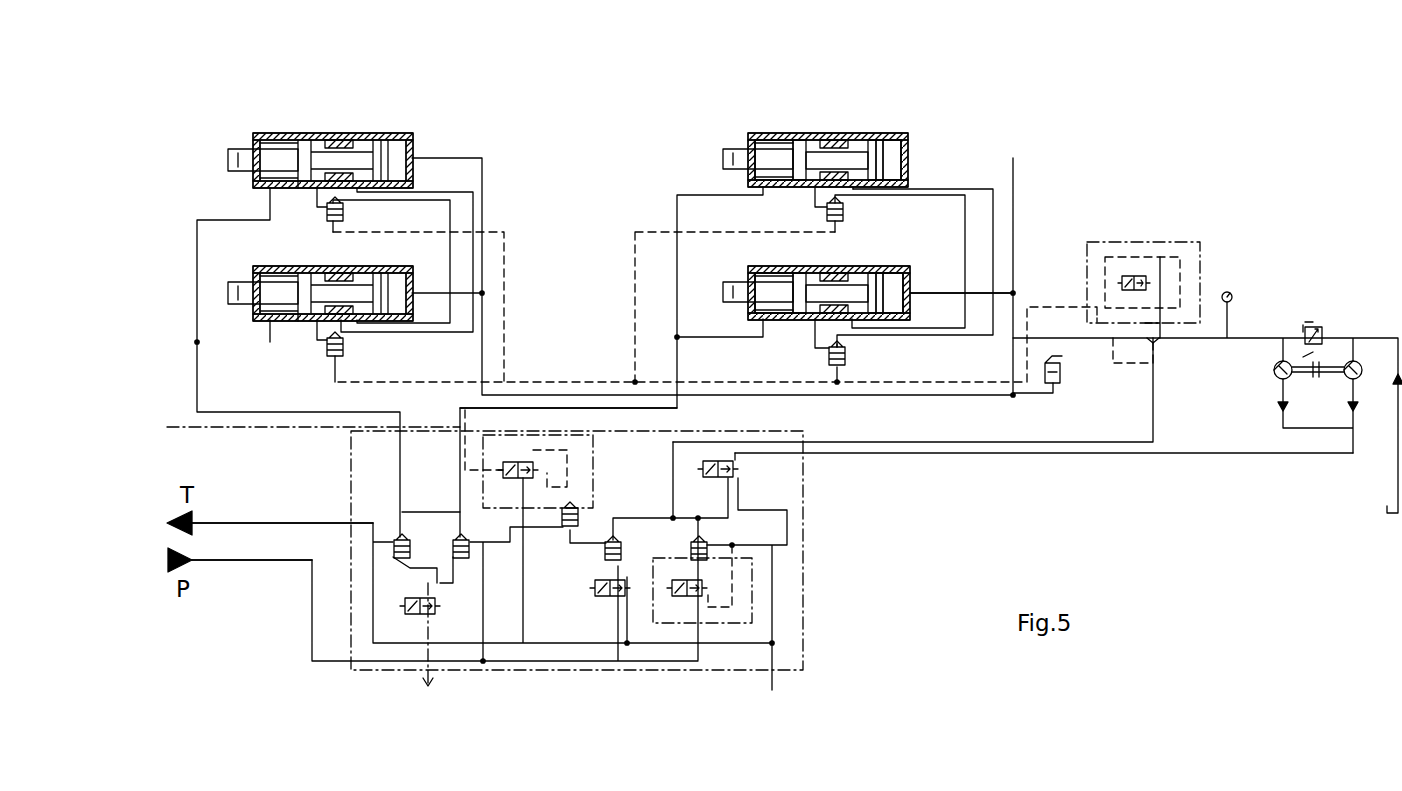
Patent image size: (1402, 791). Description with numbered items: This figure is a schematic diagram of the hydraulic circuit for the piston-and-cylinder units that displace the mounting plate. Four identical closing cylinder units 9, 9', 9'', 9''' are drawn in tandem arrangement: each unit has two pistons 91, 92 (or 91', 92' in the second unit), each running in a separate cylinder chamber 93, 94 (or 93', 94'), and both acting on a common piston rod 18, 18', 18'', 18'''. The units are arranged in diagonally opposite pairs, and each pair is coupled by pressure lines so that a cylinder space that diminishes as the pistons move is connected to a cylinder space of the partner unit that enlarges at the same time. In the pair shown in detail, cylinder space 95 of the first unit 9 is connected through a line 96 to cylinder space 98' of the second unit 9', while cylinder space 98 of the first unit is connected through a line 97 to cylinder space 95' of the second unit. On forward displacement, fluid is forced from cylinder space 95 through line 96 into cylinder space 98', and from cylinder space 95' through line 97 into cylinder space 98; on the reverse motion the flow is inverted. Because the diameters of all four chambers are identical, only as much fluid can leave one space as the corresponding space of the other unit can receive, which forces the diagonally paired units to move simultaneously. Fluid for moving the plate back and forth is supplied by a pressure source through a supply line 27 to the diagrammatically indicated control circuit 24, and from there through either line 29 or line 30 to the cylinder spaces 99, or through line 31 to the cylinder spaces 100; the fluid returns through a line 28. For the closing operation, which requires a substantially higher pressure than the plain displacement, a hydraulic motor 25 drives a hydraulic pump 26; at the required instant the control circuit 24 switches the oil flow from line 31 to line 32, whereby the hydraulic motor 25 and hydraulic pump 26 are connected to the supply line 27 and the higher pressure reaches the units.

The hydraulic piston-and-cylinder unit 9 is at (870, 137).
The second piston-and-cylinder unit 9' is at (900, 262).
The piston-and-cylinder unit 9'' is at (402, 160).
The piston-and-cylinder unit 9''' is at (398, 293).
The piston rod 18 is at (727, 156).
The piston rod 18' is at (739, 276).
The piston rod 18'' is at (235, 156).
The piston rod 18''' is at (246, 273).
The control circuit 24 is at (793, 572).
The hydraulic motor 25 is at (1358, 362).
The hydraulic pump 26 is at (1276, 364).
The supply line 27 is at (232, 562).
The return line 28 is at (275, 523).
The line 29 is at (270, 412).
The line 30 is at (620, 409).
The line 31 is at (950, 443).
The line 32 is at (1095, 454).
The piston 91 is at (785, 113).
The piston 92 is at (907, 117).
The cylinder chamber 93 is at (766, 126).
The cylinder chamber 94 is at (838, 115).
The cylinder space 95 is at (878, 127).
The line 96 is at (995, 208).
The line 97 is at (1000, 272).
The cylinder space 98 is at (835, 123).
The cylinder space 99 is at (762, 138).
The cylinder space 100 is at (905, 150).
The piston 91' is at (790, 257).
The piston 92' is at (916, 269).
The cylinder chamber 93' is at (757, 259).
The cylinder chamber 94' is at (848, 267).
The cylinder space 95' is at (892, 258).
The cylinder space 98' is at (833, 268).